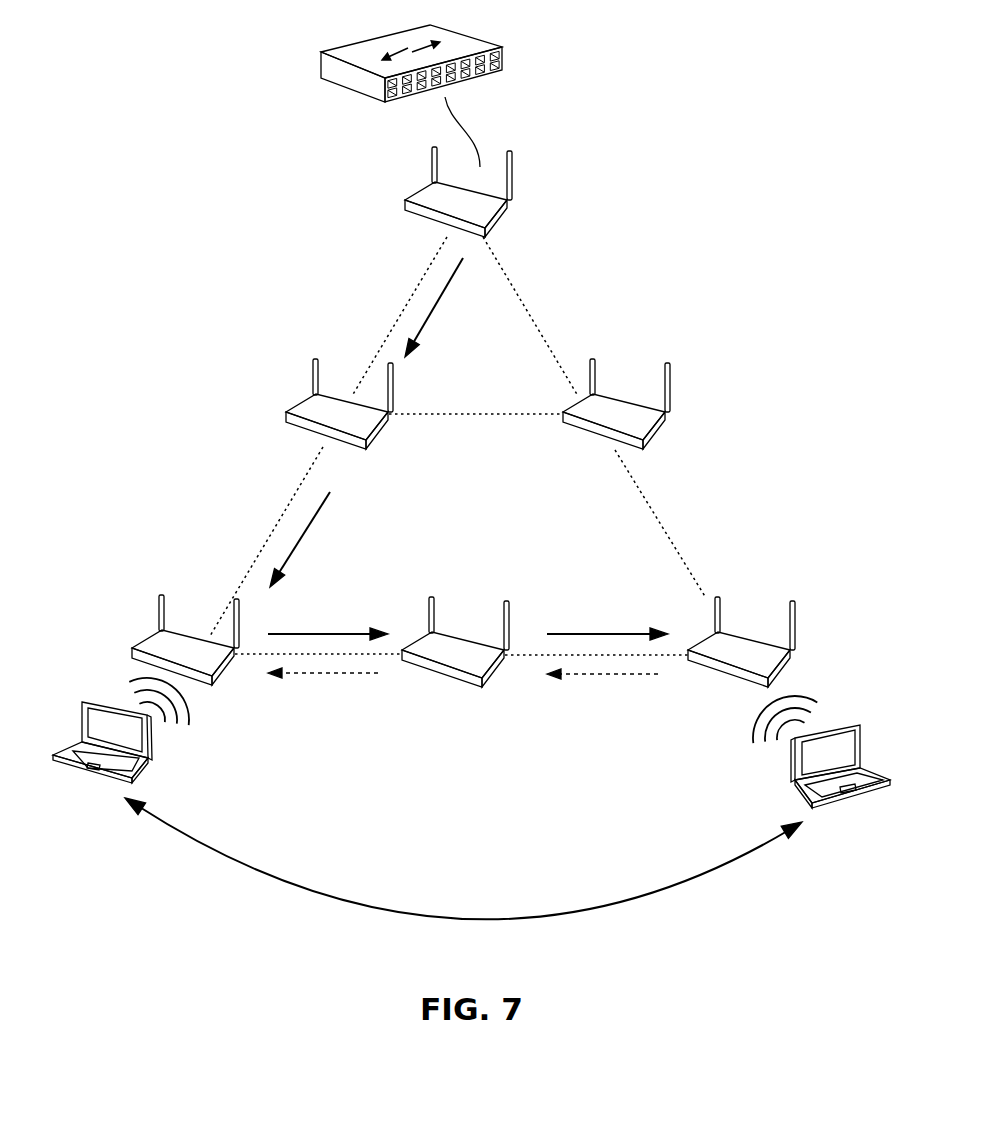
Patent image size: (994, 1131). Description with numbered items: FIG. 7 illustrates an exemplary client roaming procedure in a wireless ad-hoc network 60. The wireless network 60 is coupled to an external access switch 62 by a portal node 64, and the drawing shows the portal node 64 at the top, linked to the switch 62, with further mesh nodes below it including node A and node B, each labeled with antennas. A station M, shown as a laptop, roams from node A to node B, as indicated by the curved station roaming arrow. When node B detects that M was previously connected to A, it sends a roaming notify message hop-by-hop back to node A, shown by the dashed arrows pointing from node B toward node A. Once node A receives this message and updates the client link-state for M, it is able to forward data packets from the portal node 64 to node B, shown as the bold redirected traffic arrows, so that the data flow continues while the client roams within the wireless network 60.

The wireless network 60 is at (252, 277).
The external access switch 62 is at (487, 44).
The portal node 64 is at (510, 208).